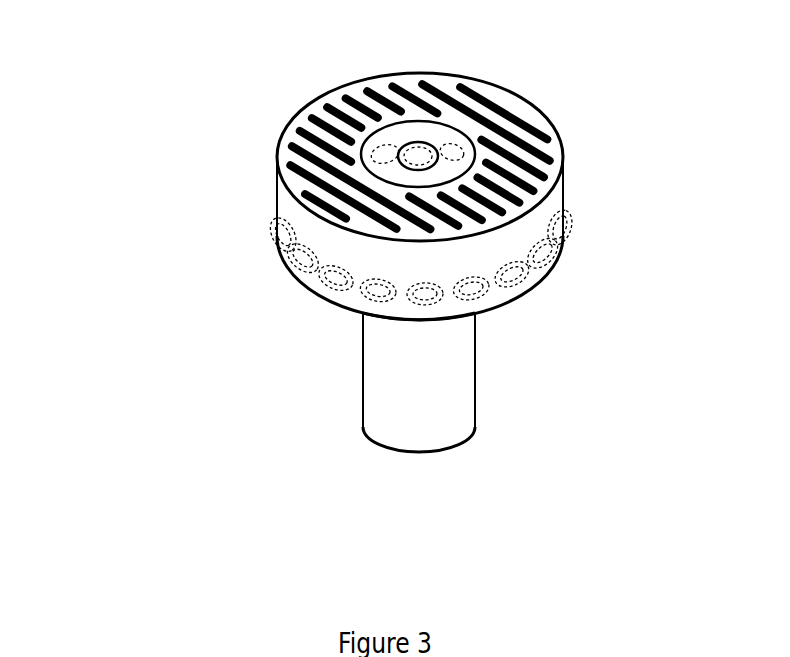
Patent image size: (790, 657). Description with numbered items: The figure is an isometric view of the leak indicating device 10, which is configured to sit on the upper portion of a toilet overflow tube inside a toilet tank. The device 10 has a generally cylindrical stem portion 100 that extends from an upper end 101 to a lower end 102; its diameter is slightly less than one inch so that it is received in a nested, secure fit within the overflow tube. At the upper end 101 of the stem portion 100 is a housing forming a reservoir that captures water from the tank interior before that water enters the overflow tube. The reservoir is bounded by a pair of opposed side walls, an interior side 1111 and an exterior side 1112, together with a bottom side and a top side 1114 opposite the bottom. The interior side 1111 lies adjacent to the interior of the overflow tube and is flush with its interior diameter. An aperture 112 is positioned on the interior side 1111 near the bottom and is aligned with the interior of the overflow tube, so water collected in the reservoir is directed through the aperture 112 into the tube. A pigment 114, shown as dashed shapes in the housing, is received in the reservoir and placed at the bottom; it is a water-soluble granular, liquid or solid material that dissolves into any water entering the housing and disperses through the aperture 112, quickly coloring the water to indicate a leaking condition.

The device 10 is at (190, 128).
The interior side 1111 is at (318, 95).
The aperture 112 is at (423, 148).
The top side 1114 is at (559, 129).
The exterior side 1112 is at (283, 207).
The pigment 114 is at (492, 273).
The upper end 101 is at (368, 322).
The stem portion 100 is at (458, 369).
The lower end 102 is at (373, 437).